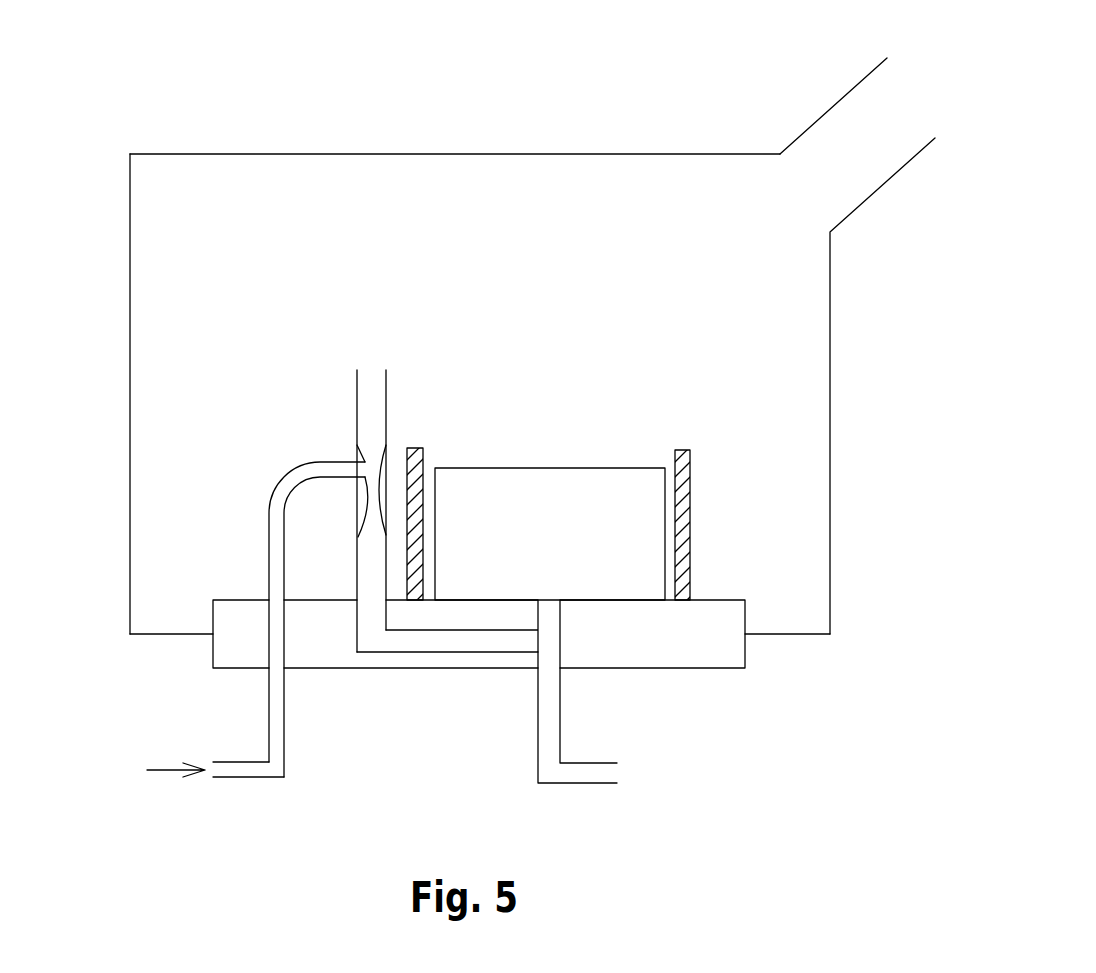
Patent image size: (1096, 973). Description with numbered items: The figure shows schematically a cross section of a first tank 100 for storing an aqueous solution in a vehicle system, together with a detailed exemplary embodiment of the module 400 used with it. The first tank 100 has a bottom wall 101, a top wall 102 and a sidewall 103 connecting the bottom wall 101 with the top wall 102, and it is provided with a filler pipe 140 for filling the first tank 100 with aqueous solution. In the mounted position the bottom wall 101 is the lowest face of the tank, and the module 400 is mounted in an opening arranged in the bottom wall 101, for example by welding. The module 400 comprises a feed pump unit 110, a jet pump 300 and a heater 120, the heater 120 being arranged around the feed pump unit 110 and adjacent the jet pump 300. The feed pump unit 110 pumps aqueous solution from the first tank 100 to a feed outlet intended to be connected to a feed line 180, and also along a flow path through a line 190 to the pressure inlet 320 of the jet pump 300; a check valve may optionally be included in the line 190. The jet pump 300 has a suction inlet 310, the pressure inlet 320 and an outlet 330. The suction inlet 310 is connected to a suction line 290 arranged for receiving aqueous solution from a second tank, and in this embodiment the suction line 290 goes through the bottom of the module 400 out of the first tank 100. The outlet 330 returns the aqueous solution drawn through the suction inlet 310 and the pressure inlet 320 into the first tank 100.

The first tank 100 is at (486, 365).
The bottom wall 101 is at (790, 634).
The top wall 102 is at (340, 153).
The sidewall 103 is at (130, 298).
The feed pump unit 110 is at (548, 468).
The heater 120 is at (416, 450).
The filler pipe 140 is at (840, 97).
The feed line 180 is at (560, 703).
The line 190 is at (437, 653).
The suction line 290 is at (237, 778).
The jet pump 300 is at (321, 563).
The suction inlet 310 is at (339, 449).
The pressure inlet 320 is at (368, 556).
The outlet 330 is at (372, 400).
The module 400 is at (731, 700).